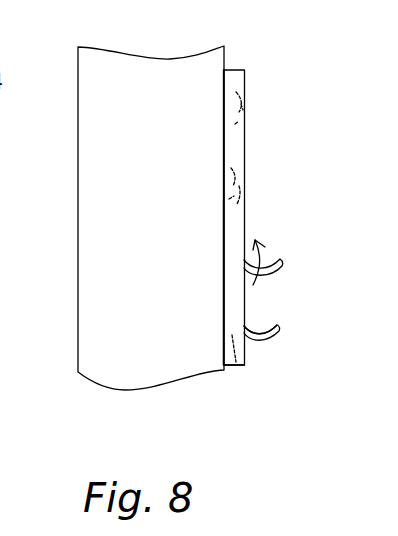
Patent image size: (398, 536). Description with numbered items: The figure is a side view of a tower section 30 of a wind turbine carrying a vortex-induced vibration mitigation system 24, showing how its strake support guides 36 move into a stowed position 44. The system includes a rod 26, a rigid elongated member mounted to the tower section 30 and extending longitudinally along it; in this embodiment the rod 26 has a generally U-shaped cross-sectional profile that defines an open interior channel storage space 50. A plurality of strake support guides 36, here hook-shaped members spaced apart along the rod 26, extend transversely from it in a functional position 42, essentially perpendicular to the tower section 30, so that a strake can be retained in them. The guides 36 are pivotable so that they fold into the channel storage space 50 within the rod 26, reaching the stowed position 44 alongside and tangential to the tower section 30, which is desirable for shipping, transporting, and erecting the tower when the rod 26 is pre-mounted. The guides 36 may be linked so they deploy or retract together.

The vortex-induced vibration mitigation system 24 is at (204, 118).
The rod 26 is at (222, 290).
The tower section 30 is at (92, 163).
The strake support guides 36 is at (239, 188).
The functional position 42 is at (287, 329).
The stowed position 44 is at (258, 117).
The channel storage space 50 is at (233, 365).